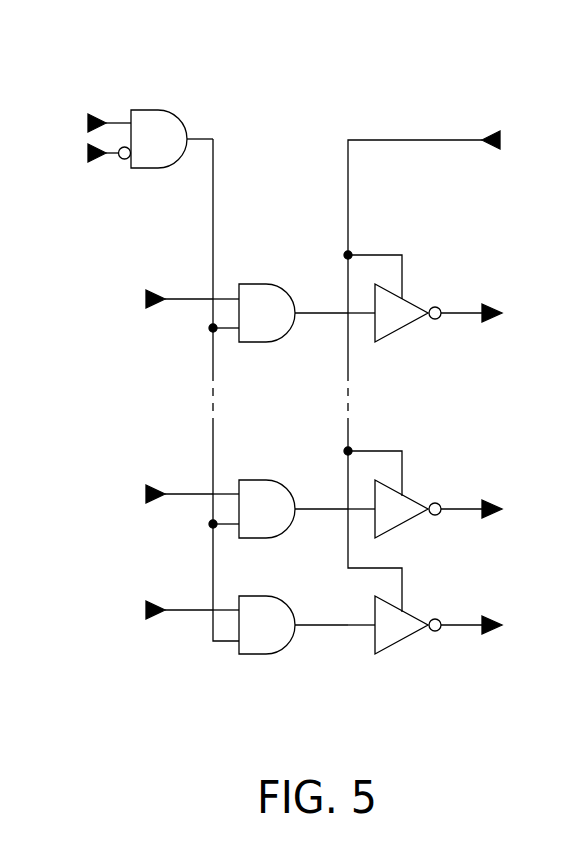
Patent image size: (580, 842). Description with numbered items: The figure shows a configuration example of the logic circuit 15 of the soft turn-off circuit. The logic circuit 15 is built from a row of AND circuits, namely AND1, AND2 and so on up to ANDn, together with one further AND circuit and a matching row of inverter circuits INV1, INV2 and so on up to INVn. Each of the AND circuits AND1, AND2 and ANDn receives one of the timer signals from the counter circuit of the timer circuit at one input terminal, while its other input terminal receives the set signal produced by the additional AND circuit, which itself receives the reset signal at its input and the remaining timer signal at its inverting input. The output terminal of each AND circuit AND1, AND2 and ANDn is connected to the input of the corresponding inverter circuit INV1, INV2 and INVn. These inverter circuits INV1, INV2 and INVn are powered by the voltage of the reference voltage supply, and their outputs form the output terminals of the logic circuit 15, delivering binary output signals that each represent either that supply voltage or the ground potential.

The logic circuit 15 is at (467, 90).
The AND circuit ANDn is at (280, 296).
The AND circuit AND2 is at (280, 490).
The AND circuit AND1 is at (280, 608).
The inverter circuit INVn is at (428, 306).
The inverter circuit INV2 is at (428, 502).
The inverter circuit INV1 is at (428, 617).